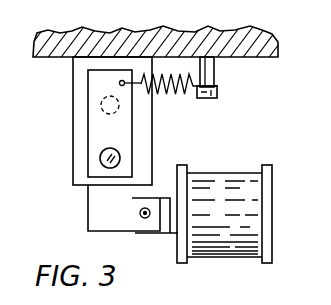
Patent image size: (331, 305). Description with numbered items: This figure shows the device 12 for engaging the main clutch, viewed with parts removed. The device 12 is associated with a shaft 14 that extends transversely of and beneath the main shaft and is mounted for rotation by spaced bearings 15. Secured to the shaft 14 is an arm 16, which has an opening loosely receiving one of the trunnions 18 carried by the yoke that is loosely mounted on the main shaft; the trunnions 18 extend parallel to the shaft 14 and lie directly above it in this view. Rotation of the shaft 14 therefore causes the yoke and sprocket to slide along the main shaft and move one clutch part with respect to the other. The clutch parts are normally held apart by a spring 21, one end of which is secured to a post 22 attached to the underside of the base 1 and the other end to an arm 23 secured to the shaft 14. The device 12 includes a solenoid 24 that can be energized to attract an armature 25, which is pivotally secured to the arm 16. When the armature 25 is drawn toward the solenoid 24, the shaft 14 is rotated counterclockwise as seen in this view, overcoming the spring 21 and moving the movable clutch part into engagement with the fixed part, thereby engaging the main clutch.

The base 1 is at (263, 60).
The device for engaging the main clutch 12 is at (228, 201).
The shaft 14 is at (100, 158).
The bearings 15 is at (150, 142).
The arm 16 is at (98, 208).
The trunnions 18 is at (105, 110).
The spring 21 is at (174, 93).
The post 22 is at (217, 75).
The arm 23 is at (96, 88).
The solenoid 24 is at (250, 173).
The armature 25 is at (171, 236).